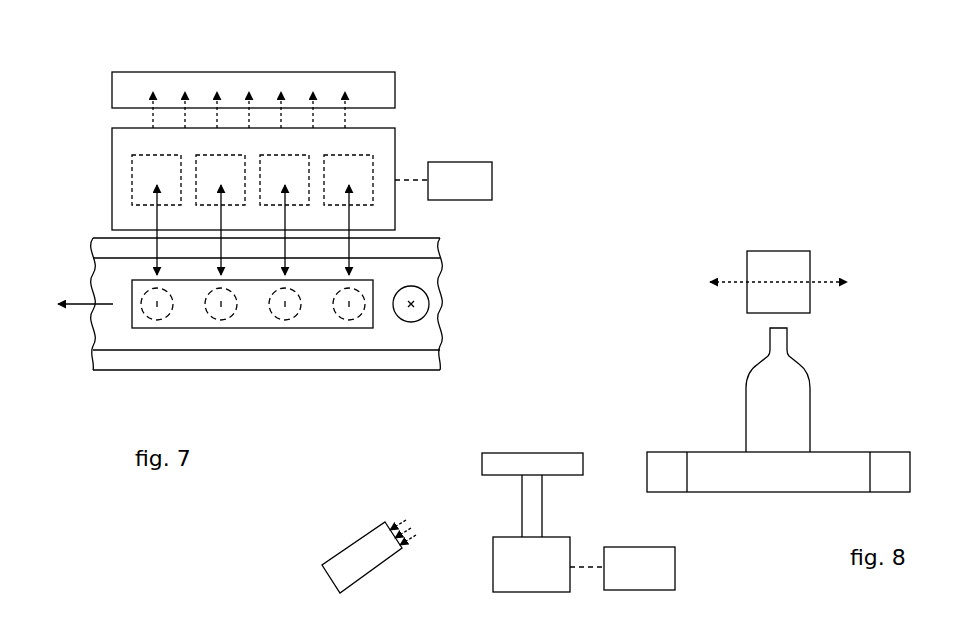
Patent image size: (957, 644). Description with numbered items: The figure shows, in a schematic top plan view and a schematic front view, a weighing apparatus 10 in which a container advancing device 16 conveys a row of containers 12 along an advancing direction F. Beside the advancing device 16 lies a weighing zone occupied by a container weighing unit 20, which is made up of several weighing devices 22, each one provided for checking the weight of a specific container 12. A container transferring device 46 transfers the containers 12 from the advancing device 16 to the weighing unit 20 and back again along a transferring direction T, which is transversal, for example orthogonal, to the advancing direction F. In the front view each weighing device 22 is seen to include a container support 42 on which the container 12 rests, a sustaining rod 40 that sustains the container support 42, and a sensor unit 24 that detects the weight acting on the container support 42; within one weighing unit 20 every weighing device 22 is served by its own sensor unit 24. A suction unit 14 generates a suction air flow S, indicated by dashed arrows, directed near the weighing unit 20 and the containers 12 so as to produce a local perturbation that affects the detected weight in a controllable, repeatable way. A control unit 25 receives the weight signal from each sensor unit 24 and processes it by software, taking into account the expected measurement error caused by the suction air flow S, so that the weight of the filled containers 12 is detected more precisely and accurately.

In FIG. 7, the apparatus 10 is at (478, 122).
In FIG. 8, the apparatus 10 is at (860, 240).
In FIG. 7, the container 12 is at (160, 310).
In FIG. 8, the container 12 is at (792, 364).
In FIG. 7, the suction unit 14 is at (399, 89).
In FIG. 8, the suction unit 14 is at (372, 580).
In FIG. 7, the container advancing device 16 is at (450, 296).
In FIG. 8, the container advancing device 16 is at (856, 442).
In FIG. 7, the container weighing unit 20 is at (96, 130).
In FIG. 8, the container weighing unit 20 is at (539, 509).
In FIG. 7, the weighing device 22 is at (132, 176).
In FIG. 8, the sensor unit 24 is at (535, 575).
In FIG. 7, the control unit 25 is at (474, 178).
In FIG. 8, the control unit 25 is at (660, 570).
In FIG. 8, the sustaining rod 40 is at (534, 511).
In FIG. 8, the container support 42 is at (513, 466).
In FIG. 7, the container transferring device 46 is at (141, 330).
In FIG. 8, the container transferring device 46 is at (757, 297).
In FIG. 7, the suction air flow S is at (156, 116).
In FIG. 8, the suction air flow S is at (420, 516).
In FIG. 7, the transferring direction T is at (153, 222).
In FIG. 8, the transferring direction T is at (783, 282).
In FIG. 7, the advancing direction F is at (80, 304).